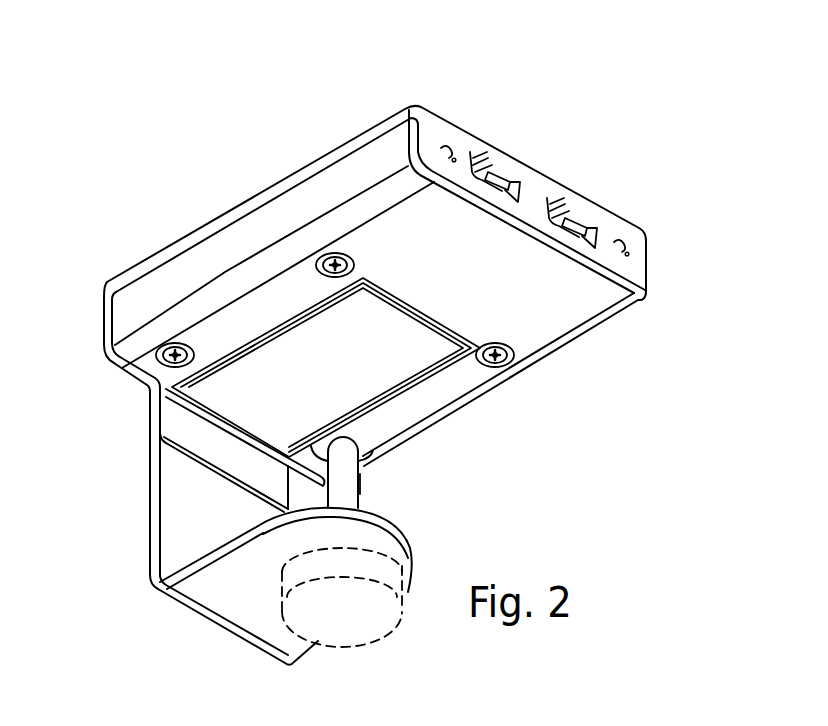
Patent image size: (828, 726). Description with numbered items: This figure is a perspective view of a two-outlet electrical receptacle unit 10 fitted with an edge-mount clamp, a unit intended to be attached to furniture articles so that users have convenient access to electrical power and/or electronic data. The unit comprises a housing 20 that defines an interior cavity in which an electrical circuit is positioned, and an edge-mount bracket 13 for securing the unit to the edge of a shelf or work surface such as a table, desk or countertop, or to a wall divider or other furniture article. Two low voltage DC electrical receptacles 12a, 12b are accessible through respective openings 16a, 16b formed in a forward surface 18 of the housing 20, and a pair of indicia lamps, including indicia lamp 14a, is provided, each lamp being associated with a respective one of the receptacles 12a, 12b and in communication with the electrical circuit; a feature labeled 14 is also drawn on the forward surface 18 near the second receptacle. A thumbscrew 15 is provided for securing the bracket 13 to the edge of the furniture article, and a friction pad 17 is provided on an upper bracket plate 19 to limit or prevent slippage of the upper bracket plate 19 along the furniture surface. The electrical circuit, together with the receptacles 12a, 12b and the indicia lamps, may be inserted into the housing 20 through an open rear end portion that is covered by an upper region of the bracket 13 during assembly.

The electrical receptacle unit 10 is at (220, 156).
The low voltage DC electrical receptacle 12a is at (488, 170).
The low voltage DC electrical receptacle 12b is at (570, 215).
The edge-mount bracket 13 is at (158, 500).
The hole 14 is at (636, 246).
The indicia lamp 14a is at (446, 136).
The thumbscrew 15 is at (362, 489).
The opening 16a is at (490, 178).
The opening 16b is at (578, 226).
The friction pad 17 is at (378, 343).
The forward surface 18 is at (643, 285).
The upper bracket plate 19 is at (407, 296).
The housing 20 is at (329, 146).